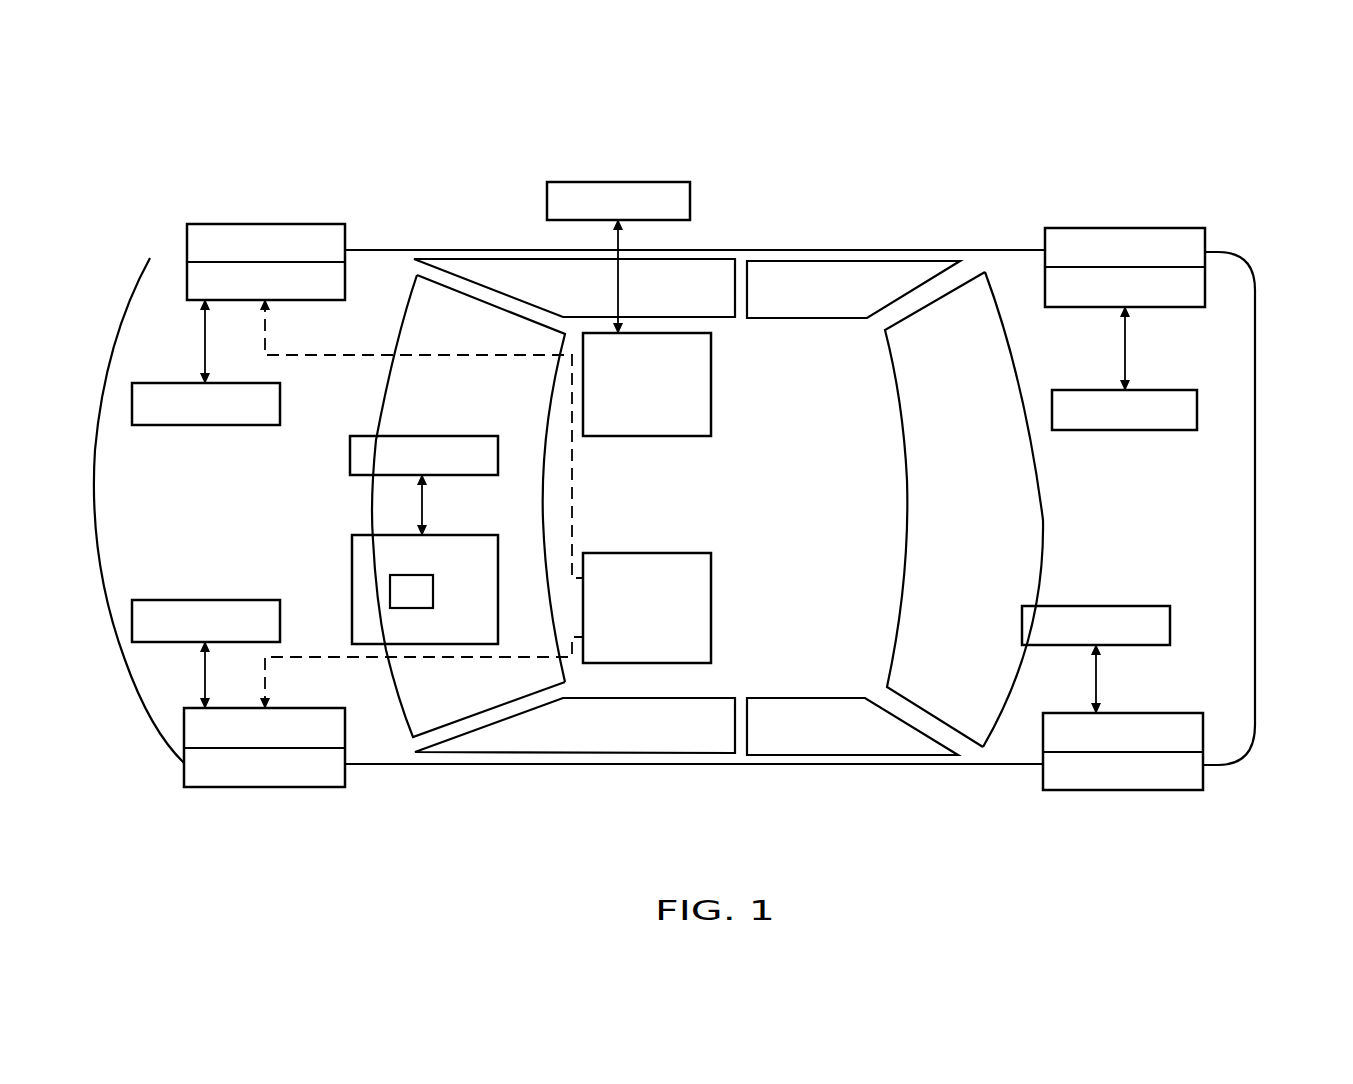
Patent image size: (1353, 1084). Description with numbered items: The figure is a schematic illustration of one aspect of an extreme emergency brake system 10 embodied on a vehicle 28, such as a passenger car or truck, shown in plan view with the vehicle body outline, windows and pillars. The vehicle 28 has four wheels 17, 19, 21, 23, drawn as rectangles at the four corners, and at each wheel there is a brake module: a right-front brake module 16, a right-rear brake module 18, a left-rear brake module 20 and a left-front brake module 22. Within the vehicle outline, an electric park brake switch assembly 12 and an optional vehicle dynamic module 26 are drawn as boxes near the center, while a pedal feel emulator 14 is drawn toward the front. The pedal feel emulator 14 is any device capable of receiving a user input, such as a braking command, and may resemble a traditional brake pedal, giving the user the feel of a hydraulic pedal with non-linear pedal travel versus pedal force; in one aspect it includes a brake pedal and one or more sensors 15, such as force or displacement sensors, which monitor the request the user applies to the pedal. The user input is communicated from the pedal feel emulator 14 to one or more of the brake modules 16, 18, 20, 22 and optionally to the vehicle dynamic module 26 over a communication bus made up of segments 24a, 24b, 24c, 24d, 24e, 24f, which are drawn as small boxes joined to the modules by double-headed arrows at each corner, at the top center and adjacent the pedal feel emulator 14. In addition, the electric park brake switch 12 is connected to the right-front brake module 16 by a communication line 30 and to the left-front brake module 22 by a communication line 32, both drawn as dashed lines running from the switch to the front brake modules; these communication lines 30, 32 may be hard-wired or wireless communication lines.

The extreme emergency brake system 10 is at (1098, 143).
The electric park brake switch assembly 12 is at (712, 607).
The pedal feel emulator 14 is at (352, 572).
The sensors 15 is at (436, 604).
The right-front brake module 16 is at (187, 278).
The wheel 17 is at (292, 224).
The right-rear brake module 18 is at (1180, 307).
The wheel 19 is at (1180, 228).
The left-rear brake module 20 is at (1190, 713).
The wheel 21 is at (1155, 790).
The left-front brake module 22 is at (184, 763).
The wheel 23 is at (290, 787).
The communication bus 24a is at (208, 425).
The communication bus 24b is at (618, 182).
The communication bus 24c is at (1135, 430).
The communication bus 24d is at (1108, 606).
The communication bus 24e is at (190, 600).
The communication bus 24f is at (430, 436).
The vehicle dynamic module 26 is at (712, 382).
The vehicle 28 is at (1255, 415).
The communication line 30 is at (364, 352).
The communication line 32 is at (360, 660).